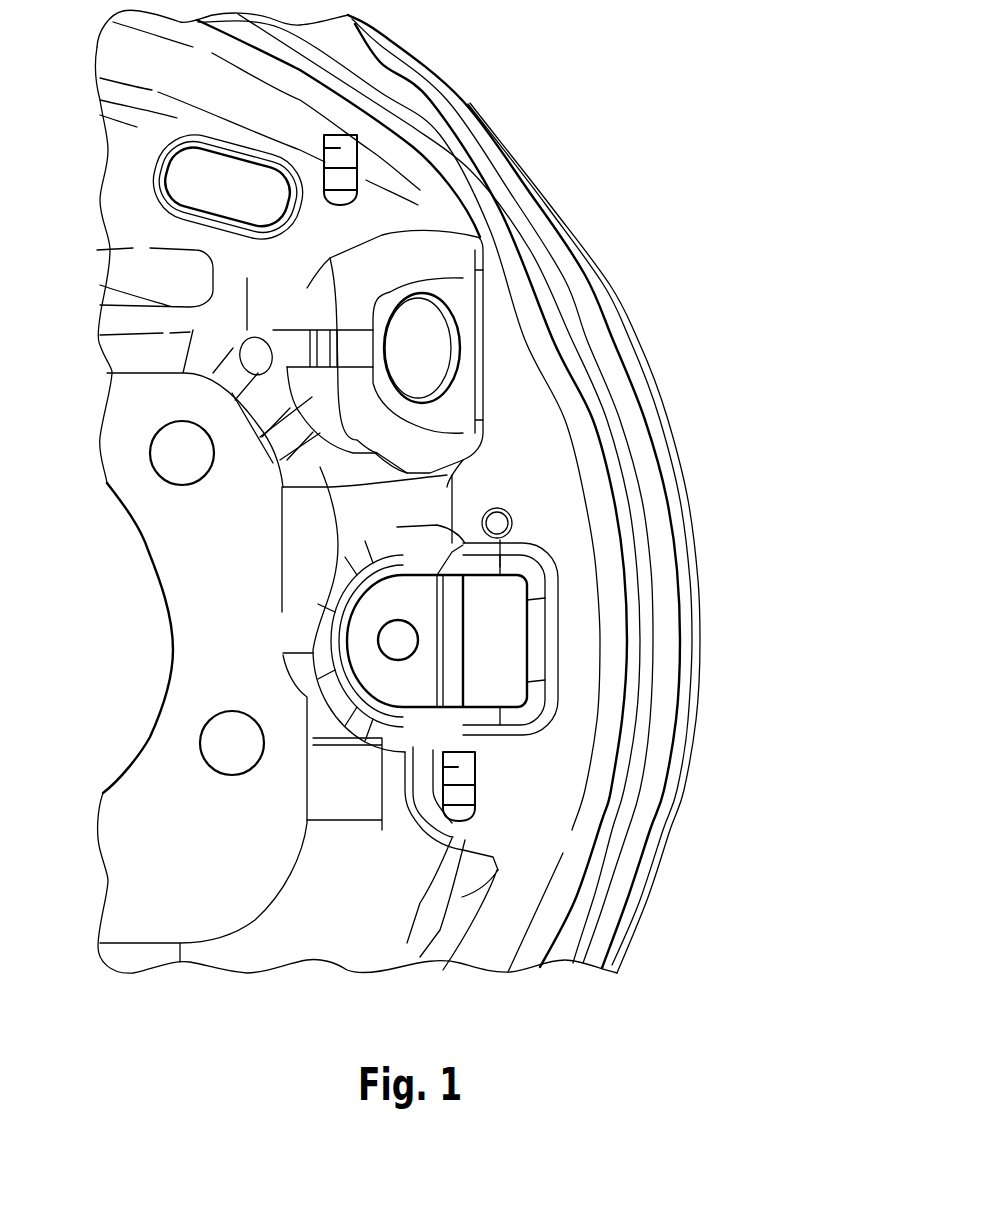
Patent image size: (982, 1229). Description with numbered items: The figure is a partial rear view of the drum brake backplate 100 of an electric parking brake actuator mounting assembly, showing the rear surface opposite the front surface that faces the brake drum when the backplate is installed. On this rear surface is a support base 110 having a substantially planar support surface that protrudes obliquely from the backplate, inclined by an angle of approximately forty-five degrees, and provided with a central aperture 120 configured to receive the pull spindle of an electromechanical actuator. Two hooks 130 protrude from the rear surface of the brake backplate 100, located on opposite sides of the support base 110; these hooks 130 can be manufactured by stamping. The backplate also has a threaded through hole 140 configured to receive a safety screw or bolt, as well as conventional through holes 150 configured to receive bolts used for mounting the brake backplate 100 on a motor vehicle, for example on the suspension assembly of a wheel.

The drum brake backplate 100 is at (738, 127).
The support base 110 is at (457, 283).
The central aperture 120 is at (427, 348).
The hooks 130 is at (340, 160).
The threaded through hole 140 is at (522, 519).
The through holes 150 is at (181, 453).